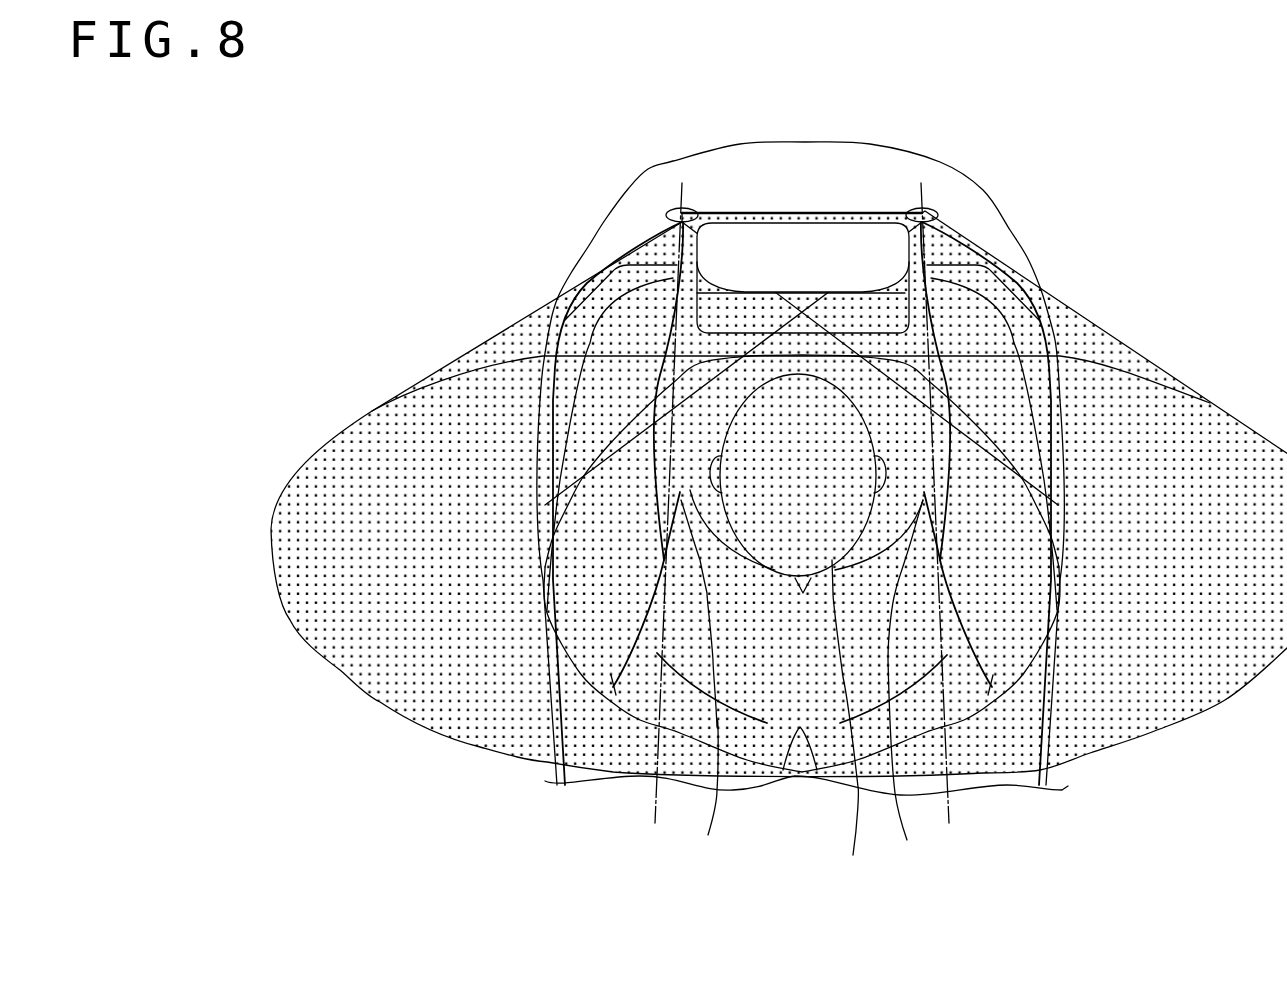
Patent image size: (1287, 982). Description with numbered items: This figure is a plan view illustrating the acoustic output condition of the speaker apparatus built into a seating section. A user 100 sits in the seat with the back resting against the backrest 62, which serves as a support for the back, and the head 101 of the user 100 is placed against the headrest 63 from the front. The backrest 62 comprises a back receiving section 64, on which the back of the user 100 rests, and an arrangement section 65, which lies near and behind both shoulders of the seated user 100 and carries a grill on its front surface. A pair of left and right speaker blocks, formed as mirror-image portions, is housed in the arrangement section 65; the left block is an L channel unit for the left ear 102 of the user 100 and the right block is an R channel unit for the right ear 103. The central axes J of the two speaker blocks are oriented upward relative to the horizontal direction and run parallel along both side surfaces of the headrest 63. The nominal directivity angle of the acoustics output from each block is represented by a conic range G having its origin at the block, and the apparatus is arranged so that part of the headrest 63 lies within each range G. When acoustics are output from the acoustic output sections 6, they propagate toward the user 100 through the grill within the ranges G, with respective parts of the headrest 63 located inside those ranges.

The acoustic output section 6 is at (670, 210).
The backrest 62 is at (822, 160).
The headrest 63 is at (773, 247).
The back receiving section 64 is at (858, 160).
The arrangement section 65 is at (710, 160).
The user 100 is at (760, 562).
The head 101 is at (851, 725).
The left ear 102 is at (911, 687).
The right ear 103 is at (700, 684).
The range of the nominal directivity angle G is at (447, 380).
The central axis J is at (650, 793).